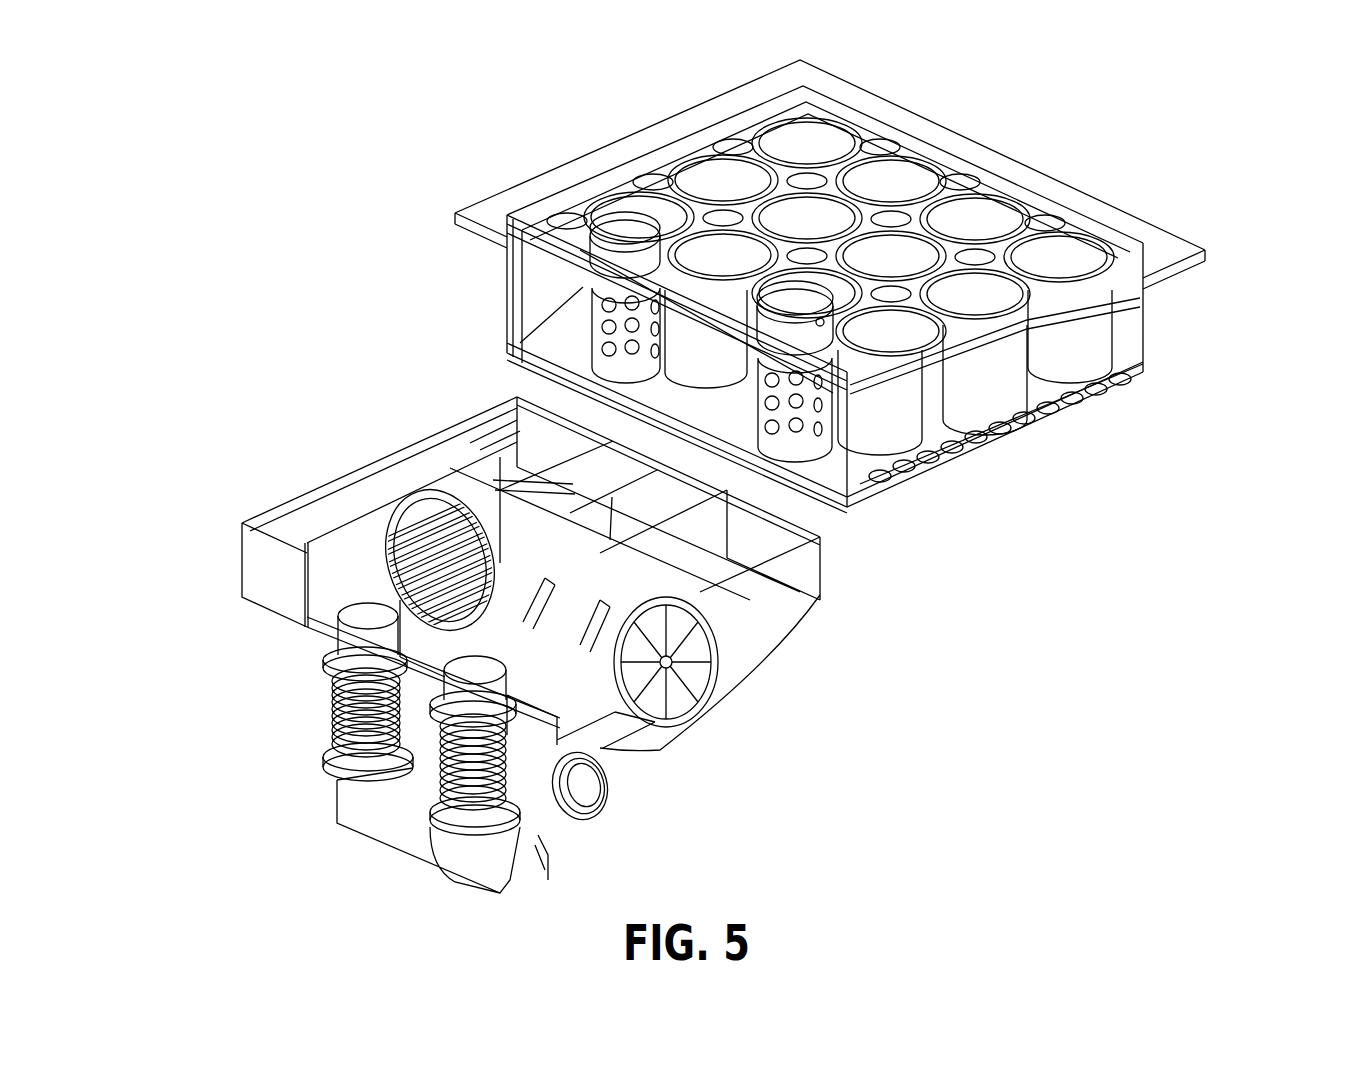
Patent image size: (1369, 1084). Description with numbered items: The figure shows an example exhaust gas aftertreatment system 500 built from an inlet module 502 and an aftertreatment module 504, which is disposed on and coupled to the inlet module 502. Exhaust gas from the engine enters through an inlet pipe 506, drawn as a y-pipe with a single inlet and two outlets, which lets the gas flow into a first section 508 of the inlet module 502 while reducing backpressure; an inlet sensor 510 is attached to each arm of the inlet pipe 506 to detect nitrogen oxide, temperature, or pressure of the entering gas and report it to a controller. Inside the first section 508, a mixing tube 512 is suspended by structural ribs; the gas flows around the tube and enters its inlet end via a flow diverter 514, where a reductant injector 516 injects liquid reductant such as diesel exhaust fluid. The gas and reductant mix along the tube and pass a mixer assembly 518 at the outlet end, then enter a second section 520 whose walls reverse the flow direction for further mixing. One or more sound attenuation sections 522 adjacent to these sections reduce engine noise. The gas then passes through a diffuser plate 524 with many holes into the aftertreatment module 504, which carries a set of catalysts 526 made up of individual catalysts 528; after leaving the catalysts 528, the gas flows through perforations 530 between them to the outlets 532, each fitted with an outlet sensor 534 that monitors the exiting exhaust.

The exhaust gas aftertreatment system 500 is at (172, 58).
The inlet module 502 is at (185, 572).
The aftertreatment module 504 is at (1243, 250).
The inlet pipe 506 is at (400, 820).
The first section 508 is at (330, 603).
The inlet sensor 510 is at (447, 713).
The mixing tube 512 is at (632, 583).
The flow diverter 514 is at (703, 670).
The reductant injector 516 is at (607, 690).
The mixer assembly 518 is at (450, 510).
The second section 520 is at (497, 437).
The sound attenuation section 522 is at (290, 523).
The diffuser plate 524 is at (998, 440).
The set of catalysts 526 is at (1113, 240).
The catalyst 528 is at (1050, 257).
The perforation 530 is at (648, 182).
The outlet 532 is at (620, 230).
The outlet sensor 534 is at (820, 320).